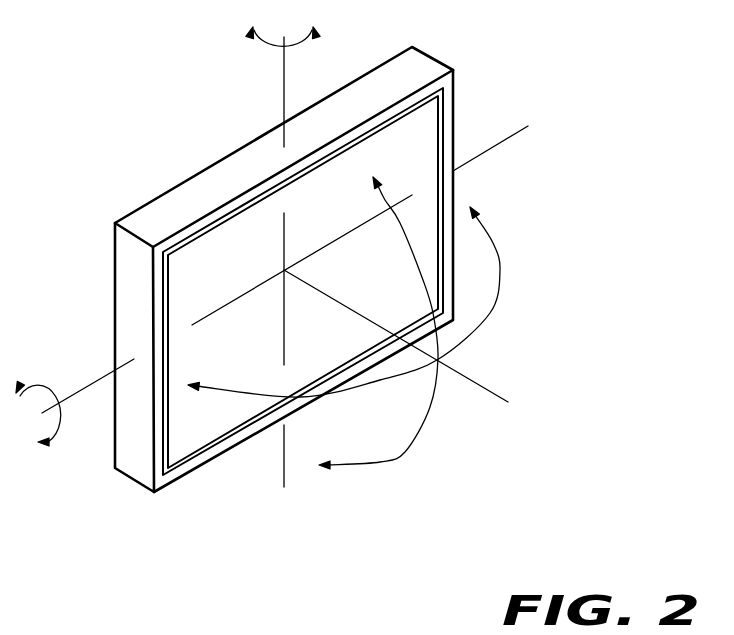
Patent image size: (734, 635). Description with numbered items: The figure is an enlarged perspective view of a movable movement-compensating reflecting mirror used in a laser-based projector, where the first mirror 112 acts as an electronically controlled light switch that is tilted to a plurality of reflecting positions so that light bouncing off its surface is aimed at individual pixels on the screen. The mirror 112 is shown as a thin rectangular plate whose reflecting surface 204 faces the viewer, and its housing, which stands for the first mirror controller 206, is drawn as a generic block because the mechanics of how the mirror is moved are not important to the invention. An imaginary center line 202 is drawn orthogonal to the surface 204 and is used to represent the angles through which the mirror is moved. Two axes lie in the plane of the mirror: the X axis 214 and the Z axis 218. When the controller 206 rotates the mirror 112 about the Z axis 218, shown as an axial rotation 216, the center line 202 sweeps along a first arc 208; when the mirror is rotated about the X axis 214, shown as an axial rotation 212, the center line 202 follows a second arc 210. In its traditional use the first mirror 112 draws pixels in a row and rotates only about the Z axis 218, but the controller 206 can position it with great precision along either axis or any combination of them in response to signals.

The first mirror 112 is at (224, 284).
The imaginary center line 202 is at (480, 382).
The surface 204 is at (430, 123).
The first mirror controller 206 is at (127, 293).
The first arc 208 is at (498, 251).
The arc 210 is at (403, 453).
The axial rotation 212 is at (58, 443).
The X axis 214 is at (97, 378).
The axial rotation 216 is at (317, 40).
The Z axis 218 is at (283, 86).